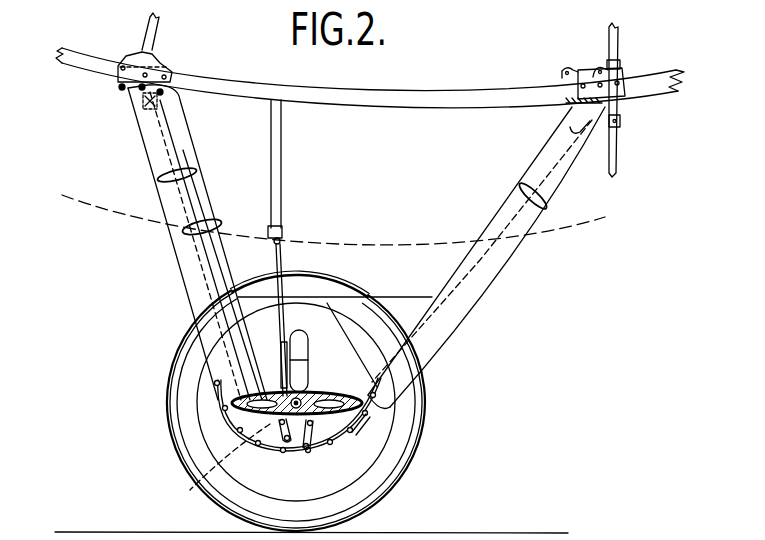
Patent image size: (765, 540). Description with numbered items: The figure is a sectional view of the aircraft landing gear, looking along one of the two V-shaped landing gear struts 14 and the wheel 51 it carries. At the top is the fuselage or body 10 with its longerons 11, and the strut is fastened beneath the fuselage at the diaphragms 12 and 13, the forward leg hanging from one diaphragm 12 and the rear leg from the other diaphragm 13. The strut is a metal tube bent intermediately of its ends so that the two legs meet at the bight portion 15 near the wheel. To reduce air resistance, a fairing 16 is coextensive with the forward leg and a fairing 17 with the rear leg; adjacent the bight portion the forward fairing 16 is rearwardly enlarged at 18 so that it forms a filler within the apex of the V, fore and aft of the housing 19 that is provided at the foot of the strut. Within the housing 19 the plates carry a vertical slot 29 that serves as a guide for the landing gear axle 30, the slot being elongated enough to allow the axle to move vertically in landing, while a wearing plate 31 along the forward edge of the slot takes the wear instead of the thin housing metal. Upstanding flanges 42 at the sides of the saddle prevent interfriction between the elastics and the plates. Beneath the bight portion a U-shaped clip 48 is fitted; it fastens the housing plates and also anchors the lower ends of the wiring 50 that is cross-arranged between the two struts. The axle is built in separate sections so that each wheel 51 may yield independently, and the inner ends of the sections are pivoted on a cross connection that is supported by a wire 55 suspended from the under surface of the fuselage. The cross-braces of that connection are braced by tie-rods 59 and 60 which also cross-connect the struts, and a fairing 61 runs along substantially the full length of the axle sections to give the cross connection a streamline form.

The fuselage or body 10 is at (122, 211).
The longerons 11 is at (413, 95).
The diaphragm 12 is at (153, 42).
The diaphragm 13 is at (616, 43).
The landing gear strut 14 is at (148, 155).
The bight portion 15 is at (197, 468).
The fairing 16 is at (194, 143).
The fairing 17 is at (506, 257).
The rearward enlargement of fairing 18 is at (385, 303).
The housing 19 is at (353, 348).
The vertical slot 29 is at (288, 387).
The landing gear axle 30 is at (295, 420).
The wearing plate 31 is at (282, 367).
The upstanding flange 42 is at (306, 367).
The U-shaped clip 48 is at (318, 450).
The wiring 50 is at (213, 267).
The wheel 51 is at (426, 405).
The wire 55 is at (282, 263).
The tie-rod 59 is at (260, 422).
The tie-rod 60 is at (365, 440).
The fairing 61 is at (308, 388).